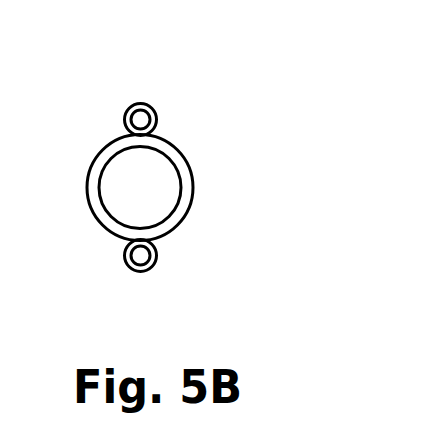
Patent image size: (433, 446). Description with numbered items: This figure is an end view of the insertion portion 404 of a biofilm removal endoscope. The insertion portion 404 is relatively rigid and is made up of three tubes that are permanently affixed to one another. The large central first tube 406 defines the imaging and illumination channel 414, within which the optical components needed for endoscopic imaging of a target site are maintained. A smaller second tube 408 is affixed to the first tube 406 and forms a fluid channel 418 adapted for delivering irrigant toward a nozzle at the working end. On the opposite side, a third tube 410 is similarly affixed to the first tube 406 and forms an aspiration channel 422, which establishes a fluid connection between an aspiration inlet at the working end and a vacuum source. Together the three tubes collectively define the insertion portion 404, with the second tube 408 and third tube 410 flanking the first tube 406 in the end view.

The insertion portion 404 is at (159, 62).
The first tube 406 is at (202, 166).
The second tube 408 is at (164, 104).
The third tube 410 is at (162, 273).
The imaging and illumination channel 414 is at (153, 207).
The fluid channel 418 is at (135, 120).
The aspiration channel 422 is at (136, 256).